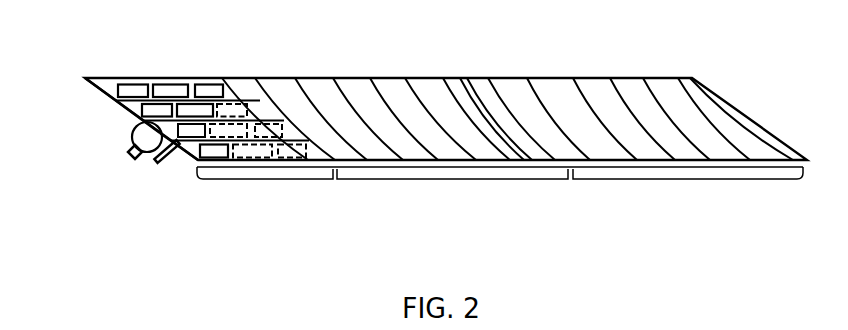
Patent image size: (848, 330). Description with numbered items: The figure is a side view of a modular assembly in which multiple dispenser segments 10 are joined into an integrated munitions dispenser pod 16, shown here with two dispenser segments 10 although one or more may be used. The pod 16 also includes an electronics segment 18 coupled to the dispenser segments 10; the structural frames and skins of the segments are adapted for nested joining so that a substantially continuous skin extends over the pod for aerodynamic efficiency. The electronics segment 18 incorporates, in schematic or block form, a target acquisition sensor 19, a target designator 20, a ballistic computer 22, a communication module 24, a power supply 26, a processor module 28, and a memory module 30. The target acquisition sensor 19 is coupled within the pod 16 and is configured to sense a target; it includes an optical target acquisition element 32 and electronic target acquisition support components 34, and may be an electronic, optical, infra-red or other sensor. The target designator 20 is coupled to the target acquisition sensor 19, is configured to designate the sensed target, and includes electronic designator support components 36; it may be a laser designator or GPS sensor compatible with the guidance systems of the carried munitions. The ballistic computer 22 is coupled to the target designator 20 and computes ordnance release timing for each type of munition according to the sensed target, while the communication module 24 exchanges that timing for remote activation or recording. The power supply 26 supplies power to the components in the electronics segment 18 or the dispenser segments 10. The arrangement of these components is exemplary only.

The dispenser segment 10 is at (452, 179).
The integrated munitions dispenser pod 16 is at (480, 60).
The electronics segment 18 is at (266, 179).
The target acquisition sensor 19 is at (145, 135).
The target designator 20 is at (175, 160).
The ballistic computer 22 is at (131, 90).
The communication module 24 is at (167, 89).
The power supply 26 is at (203, 91).
The processor module 28 is at (153, 108).
The memory module 30 is at (209, 104).
The optical target acquisition element 32 is at (130, 149).
The electronic target acquisition support components 34 is at (181, 147).
The electronic designator support components 36 is at (188, 153).